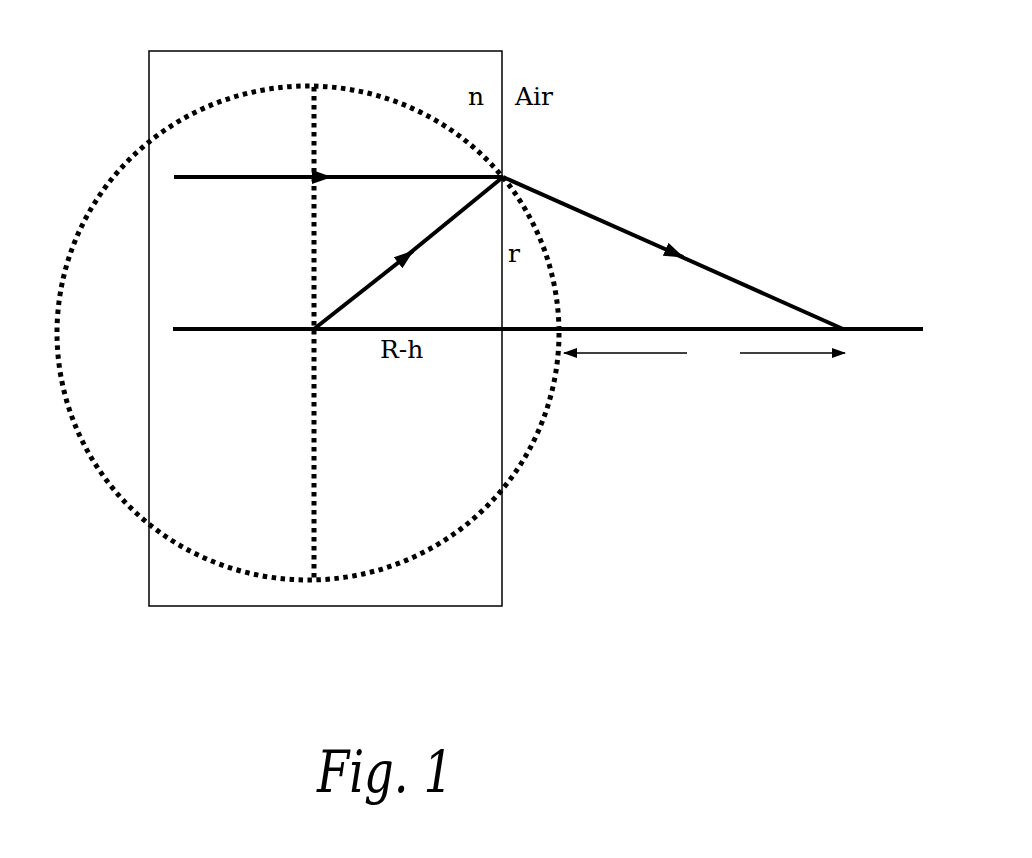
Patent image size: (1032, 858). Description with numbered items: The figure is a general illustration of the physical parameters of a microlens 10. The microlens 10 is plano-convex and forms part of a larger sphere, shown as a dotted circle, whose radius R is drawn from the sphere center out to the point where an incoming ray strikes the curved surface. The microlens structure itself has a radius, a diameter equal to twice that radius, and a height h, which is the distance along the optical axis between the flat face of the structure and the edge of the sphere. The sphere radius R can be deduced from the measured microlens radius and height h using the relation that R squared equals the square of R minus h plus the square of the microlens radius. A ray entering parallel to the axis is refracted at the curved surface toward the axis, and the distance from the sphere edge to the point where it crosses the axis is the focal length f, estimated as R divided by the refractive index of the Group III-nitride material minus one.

The microlens 10 is at (95, 178).
The sphere radius R is at (408, 253).
The focal length f is at (704, 354).
The height h is at (548, 347).